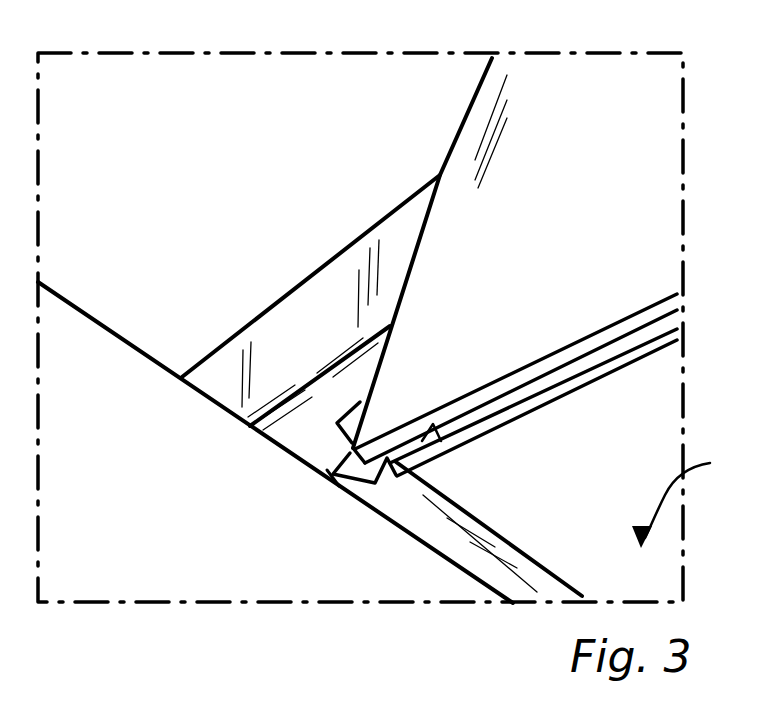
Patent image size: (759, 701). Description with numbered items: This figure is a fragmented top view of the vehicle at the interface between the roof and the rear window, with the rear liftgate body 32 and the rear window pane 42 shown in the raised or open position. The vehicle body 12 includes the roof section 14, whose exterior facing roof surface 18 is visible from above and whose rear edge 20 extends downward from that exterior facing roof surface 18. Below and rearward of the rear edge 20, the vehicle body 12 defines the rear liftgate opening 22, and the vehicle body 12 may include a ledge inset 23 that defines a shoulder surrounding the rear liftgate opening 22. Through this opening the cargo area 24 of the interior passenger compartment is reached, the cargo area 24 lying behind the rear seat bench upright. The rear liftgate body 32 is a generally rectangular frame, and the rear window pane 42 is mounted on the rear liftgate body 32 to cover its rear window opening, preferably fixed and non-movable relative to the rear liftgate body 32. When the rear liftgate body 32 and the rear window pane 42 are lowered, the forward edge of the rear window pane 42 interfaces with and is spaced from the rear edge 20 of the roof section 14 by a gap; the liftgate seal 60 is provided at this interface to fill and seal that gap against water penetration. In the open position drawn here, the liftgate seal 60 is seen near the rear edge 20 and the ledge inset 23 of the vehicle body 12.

The vehicle body 12 is at (148, 507).
The roof section 14 is at (360, 180).
The exterior facing roof surface 18 is at (170, 178).
The rear edge 20 is at (257, 352).
The rear liftgate opening 22 is at (475, 518).
The ledge inset 23 is at (320, 432).
The cargo area 24 is at (688, 499).
The rear liftgate body 32 is at (556, 397).
The rear window pane 42 is at (579, 177).
The liftgate seal 60 is at (330, 478).